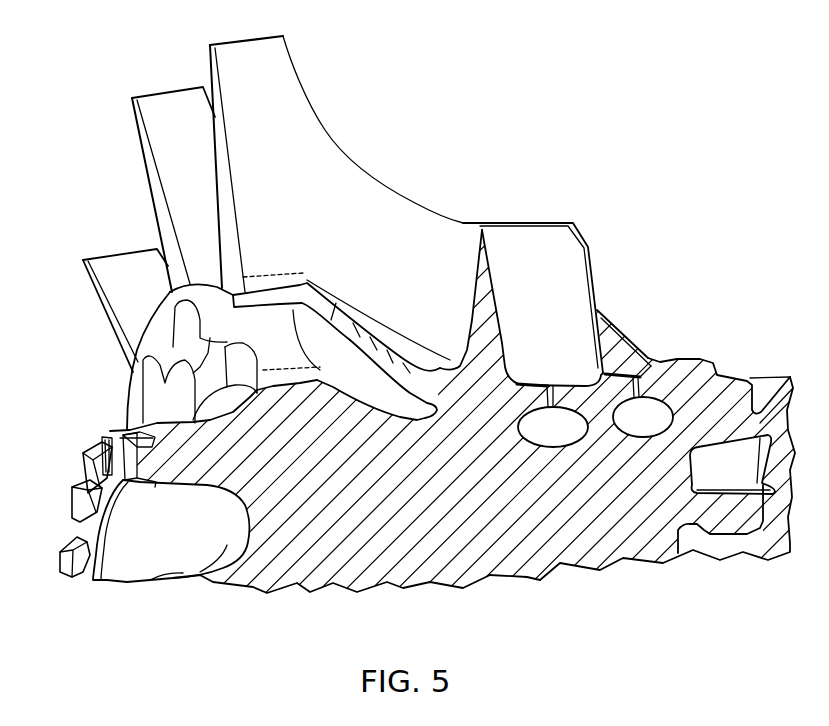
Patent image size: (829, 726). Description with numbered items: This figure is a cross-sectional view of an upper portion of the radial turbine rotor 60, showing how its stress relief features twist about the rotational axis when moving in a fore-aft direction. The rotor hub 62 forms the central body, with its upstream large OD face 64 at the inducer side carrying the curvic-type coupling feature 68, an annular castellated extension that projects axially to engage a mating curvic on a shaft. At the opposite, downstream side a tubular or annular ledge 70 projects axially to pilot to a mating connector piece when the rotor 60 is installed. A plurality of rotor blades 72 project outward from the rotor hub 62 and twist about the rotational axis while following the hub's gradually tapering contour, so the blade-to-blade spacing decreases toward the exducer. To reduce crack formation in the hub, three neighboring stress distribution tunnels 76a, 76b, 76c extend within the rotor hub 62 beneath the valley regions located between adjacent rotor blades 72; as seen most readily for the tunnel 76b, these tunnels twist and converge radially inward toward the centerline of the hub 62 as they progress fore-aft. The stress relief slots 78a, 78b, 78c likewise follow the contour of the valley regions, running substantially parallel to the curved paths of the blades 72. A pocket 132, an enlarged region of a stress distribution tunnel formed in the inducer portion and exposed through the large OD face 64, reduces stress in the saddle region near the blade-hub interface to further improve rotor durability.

The radial turbine rotor 60 is at (92, 180).
The rotor hub 62 is at (393, 546).
The large OD face 64 is at (130, 412).
The curvic-type coupling feature 68 is at (68, 506).
The tubular or annular ledge 70 is at (757, 423).
The rotor blades 72 is at (118, 251).
The first stress distribution tunnel 76a is at (400, 420).
The second stress distribution tunnel 76b is at (552, 446).
The third stress distribution tunnel 76c is at (640, 437).
The first stress relief slot 78a is at (300, 291).
The second stress relief slot 78b is at (554, 395).
The third stress relief slot 78c is at (638, 394).
The pocket 132 is at (284, 385).